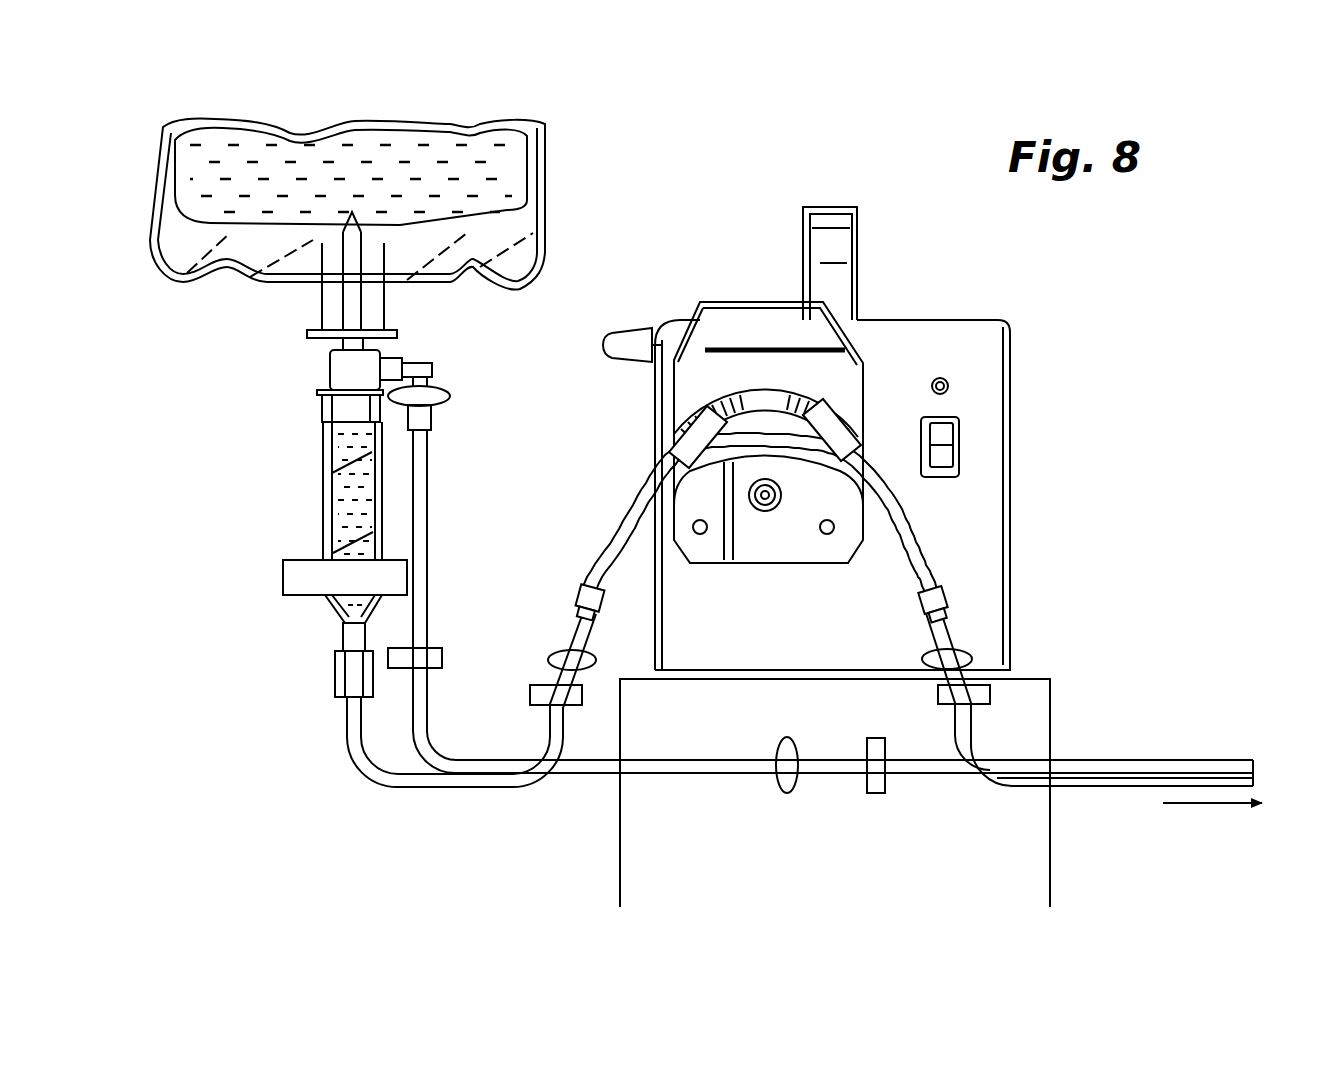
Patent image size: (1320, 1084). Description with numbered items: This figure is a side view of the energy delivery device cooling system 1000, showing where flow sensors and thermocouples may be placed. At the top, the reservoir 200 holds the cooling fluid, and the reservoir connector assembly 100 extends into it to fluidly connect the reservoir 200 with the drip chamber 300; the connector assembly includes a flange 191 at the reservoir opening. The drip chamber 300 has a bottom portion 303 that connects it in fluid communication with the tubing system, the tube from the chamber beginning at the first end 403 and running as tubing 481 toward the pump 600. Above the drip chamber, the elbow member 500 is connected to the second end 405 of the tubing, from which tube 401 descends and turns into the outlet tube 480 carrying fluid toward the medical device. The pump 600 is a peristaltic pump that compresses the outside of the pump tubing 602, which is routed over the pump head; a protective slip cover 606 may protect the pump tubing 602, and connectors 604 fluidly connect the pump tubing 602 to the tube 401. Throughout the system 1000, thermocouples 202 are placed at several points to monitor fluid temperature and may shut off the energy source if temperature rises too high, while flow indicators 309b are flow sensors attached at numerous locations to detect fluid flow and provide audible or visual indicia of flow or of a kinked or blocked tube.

The energy delivery device cooling system 1000 is at (572, 268).
The reservoir 200 is at (192, 288).
The spike flange 191 is at (318, 337).
The elbow member 500 is at (432, 360).
The thermocouple 202 is at (458, 390).
The flow indicator 309b is at (280, 577).
The reservoir connector assembly 100 is at (303, 400).
The second end 405 is at (432, 432).
The drip chamber 300 is at (330, 540).
The tube 401 is at (428, 575).
The bottom portion 303 is at (333, 650).
The first end 403 is at (348, 706).
The tubing 481 is at (405, 789).
The tubing 480 is at (560, 778).
The pump 600 is at (965, 320).
The protective slip cover 606 is at (802, 430).
The pump tubing 602 is at (918, 548).
The connector 604 is at (948, 598).